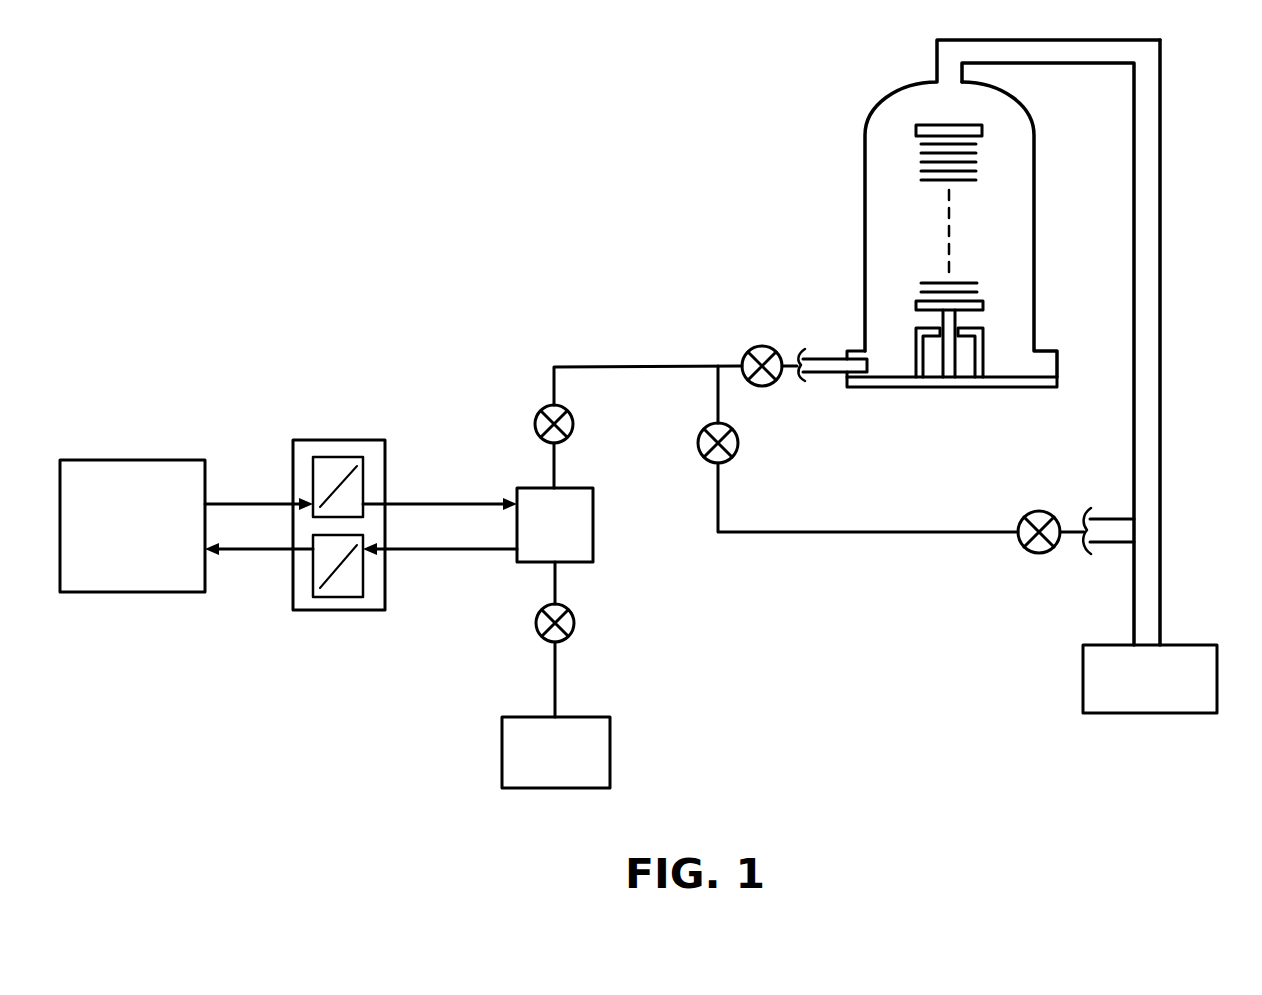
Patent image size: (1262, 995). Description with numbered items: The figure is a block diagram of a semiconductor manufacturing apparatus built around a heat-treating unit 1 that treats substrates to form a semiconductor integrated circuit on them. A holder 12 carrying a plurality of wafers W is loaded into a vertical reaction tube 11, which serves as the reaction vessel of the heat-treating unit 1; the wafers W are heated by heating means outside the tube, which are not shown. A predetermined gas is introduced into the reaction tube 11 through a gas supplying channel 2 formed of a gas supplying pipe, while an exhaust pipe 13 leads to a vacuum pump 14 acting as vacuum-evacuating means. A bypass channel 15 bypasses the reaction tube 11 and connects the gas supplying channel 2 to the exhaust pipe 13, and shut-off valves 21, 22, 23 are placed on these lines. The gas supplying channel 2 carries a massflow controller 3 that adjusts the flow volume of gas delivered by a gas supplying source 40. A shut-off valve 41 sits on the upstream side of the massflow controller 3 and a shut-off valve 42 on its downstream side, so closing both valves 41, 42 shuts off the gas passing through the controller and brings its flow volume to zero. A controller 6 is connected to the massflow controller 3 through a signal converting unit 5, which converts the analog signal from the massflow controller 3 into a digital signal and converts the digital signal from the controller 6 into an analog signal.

The heat-treating unit 1 is at (836, 116).
The reaction tube 11 is at (893, 93).
The holder 12 is at (968, 125).
The wafer W is at (973, 155).
The exhaust pipe 13 is at (1155, 176).
The vacuum pump 14 is at (1195, 645).
The bypass channel 15 is at (888, 534).
The gas supplying channel 2 is at (632, 365).
The valve 21 is at (762, 345).
The valve 22 is at (738, 446).
The valve 23 is at (1040, 510).
The massflow controller 3 is at (594, 520).
The shut-off valve 41 is at (575, 623).
The shut-off valve 42 is at (574, 424).
The gas supplying source 40 is at (590, 716).
The signal converting unit 5 is at (340, 440).
The controller 6 is at (133, 460).